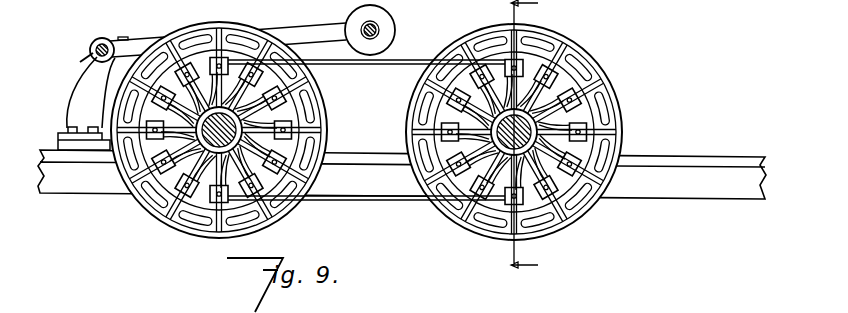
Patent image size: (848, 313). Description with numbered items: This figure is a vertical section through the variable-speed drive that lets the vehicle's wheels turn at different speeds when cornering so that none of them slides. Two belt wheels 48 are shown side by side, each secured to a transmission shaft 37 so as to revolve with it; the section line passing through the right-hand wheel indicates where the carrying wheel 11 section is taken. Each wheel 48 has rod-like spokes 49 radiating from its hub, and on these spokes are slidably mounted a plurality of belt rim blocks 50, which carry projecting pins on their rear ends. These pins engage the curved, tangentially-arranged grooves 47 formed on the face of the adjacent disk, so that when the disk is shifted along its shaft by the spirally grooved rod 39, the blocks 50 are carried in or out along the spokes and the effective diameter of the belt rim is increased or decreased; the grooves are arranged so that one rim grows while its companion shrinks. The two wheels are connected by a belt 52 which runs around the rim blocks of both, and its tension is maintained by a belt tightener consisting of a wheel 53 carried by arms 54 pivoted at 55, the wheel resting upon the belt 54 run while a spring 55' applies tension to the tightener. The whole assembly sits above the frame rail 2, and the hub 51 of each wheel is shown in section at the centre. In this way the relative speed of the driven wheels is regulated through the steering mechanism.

The rail 2 is at (709, 158).
The carrying wheel 11 is at (520, 142).
The transmission shaft 37 is at (152, 188).
The rod 39 is at (202, 196).
The tangentially-arranged grooves 47 is at (312, 154).
The wheel 48 is at (230, 14).
The rod-like spokes 49 is at (258, 56).
The belt rim blocks 50 is at (519, 62).
The hub 51 is at (297, 118).
The belt 52 is at (366, 145).
The wheel 53 is at (390, 34).
The arms 54 is at (336, 26).
The pivot 55 is at (86, 92).
The spring 55' is at (128, 25).